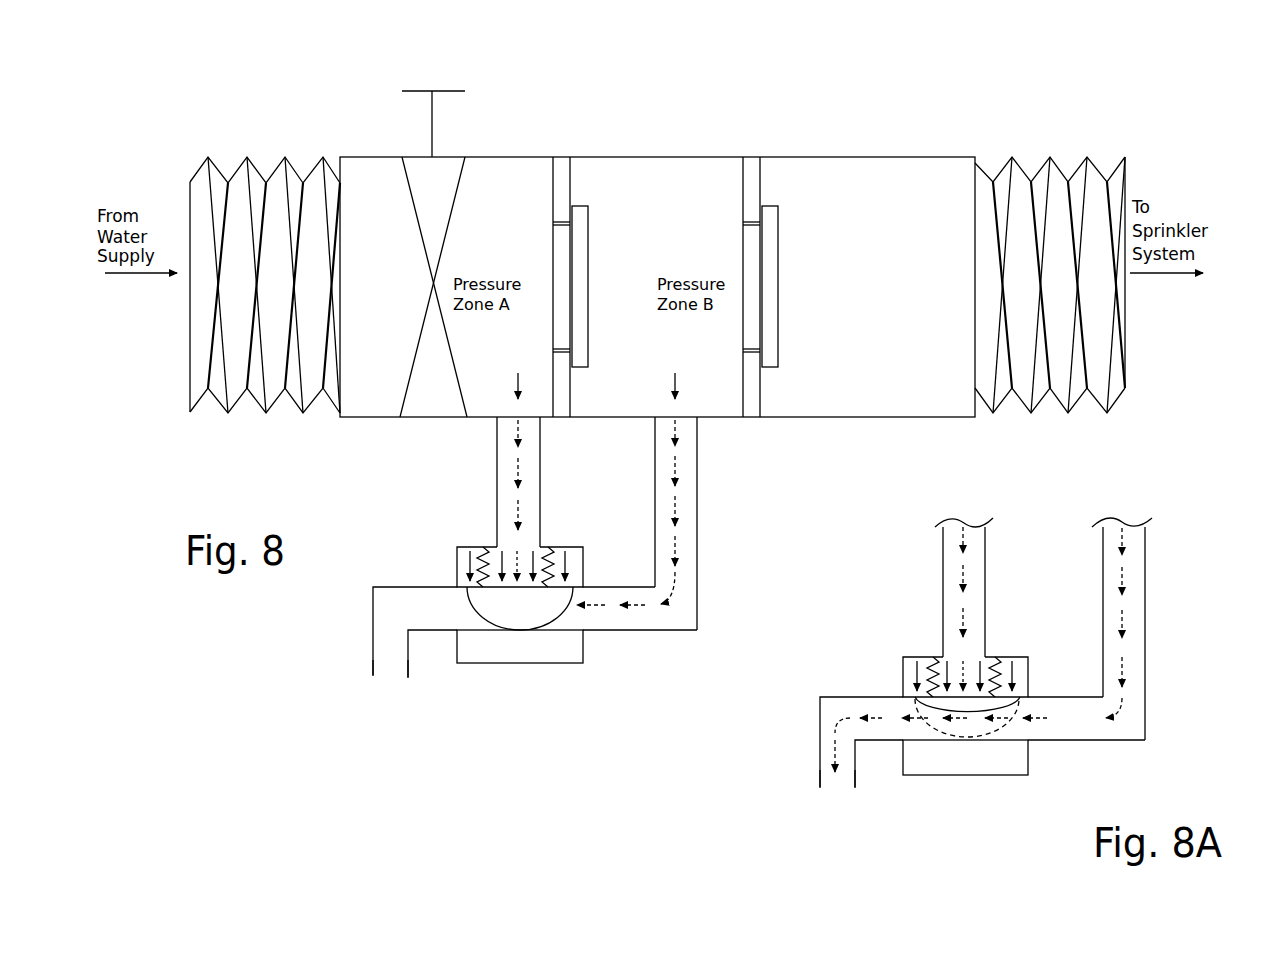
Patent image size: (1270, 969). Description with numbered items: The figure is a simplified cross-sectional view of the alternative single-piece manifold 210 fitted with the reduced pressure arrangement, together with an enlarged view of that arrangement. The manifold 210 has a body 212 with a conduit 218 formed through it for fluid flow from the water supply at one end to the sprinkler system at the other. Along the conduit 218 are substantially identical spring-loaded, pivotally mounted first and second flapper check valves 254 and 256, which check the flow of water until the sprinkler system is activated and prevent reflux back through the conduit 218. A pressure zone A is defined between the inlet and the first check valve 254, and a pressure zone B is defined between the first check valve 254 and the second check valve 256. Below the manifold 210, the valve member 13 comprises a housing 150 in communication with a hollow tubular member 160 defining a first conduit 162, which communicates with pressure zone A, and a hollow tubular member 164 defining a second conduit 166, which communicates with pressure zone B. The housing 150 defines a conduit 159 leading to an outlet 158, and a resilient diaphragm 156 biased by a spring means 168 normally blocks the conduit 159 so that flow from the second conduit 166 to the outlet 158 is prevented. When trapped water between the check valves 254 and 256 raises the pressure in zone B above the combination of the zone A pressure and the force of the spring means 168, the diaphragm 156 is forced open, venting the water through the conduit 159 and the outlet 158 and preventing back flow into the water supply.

In FIG. 8, the single-piece manifold 210 is at (714, 124).
In FIG. 8, the conduit 218 is at (367, 188).
In FIG. 8, the first flapper check valve 254 is at (590, 212).
In FIG. 8, the second flapper check valve 256 is at (778, 212).
In FIG. 8, the body 212 is at (908, 155).
In FIG. 8, the hollow tubular member 160 is at (540, 470).
In FIG. 8, the first conduit 162 is at (505, 482).
In FIG. 8, the hollow tubular member 164 is at (698, 514).
In FIG. 8A, the hollow tubular member 164 is at (1145, 620).
In FIG. 8, the second conduit 166 is at (687, 466).
In FIG. 8A, the second conduit 166 is at (1133, 673).
In FIG. 8, the housing 150 is at (460, 666).
In FIG. 8A, the housing 150 is at (903, 663).
In FIG. 8, the conduit 159 is at (422, 605).
In FIG. 8A, the conduit 159 is at (1090, 727).
In FIG. 8, the outlet 158 is at (389, 675).
In FIG. 8A, the outlet 158 is at (835, 783).
In FIG. 8, the resilient diaphragm 156 is at (543, 615).
In FIG. 8A, the resilient diaphragm 156 is at (990, 723).
In FIG. 8, the valve member 13 is at (541, 685).
In FIG. 8A, the valve member 13 is at (988, 795).
In FIG. 8A, the spring means 168 is at (933, 657).